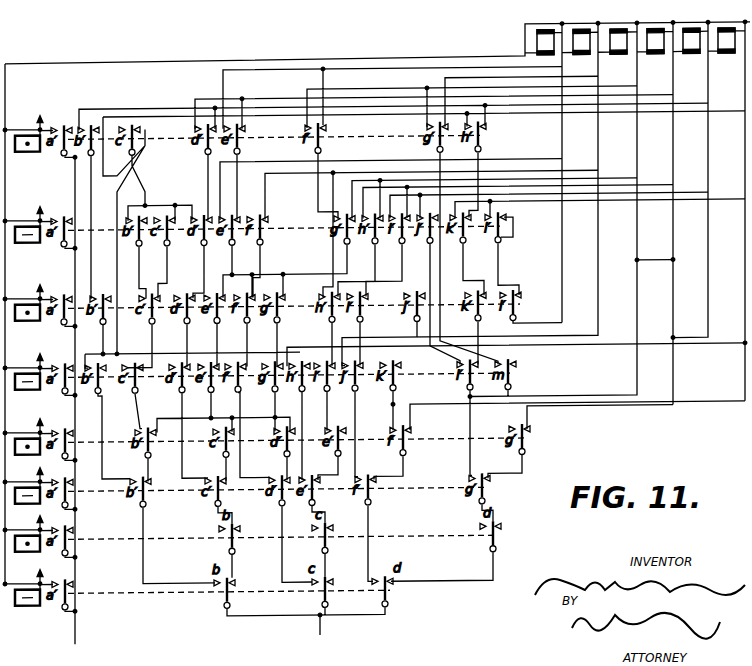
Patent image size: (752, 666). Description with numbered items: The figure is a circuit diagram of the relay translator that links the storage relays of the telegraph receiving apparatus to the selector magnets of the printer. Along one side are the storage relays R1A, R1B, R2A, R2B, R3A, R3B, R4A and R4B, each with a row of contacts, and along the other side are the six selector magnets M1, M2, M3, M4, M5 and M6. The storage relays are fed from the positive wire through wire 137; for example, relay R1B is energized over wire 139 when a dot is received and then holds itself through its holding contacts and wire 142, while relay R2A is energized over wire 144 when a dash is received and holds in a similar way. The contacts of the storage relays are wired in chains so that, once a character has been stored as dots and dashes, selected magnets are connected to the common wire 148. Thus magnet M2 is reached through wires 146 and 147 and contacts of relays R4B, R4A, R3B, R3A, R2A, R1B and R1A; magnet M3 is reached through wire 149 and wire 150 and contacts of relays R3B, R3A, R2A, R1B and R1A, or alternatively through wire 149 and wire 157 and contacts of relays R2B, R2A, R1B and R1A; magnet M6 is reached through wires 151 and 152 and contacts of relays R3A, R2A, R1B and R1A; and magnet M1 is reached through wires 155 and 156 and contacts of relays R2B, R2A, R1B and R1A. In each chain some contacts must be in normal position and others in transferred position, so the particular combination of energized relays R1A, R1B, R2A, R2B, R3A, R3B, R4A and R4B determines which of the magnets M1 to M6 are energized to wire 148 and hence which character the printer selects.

The wire 137 is at (6, 80).
The wire 139 is at (44, 583).
The wire 142 is at (80, 632).
The wire 144 is at (45, 482).
The wire 146 is at (708, 77).
The wire 147 is at (688, 101).
The wire 148 is at (323, 628).
The wire 149 is at (673, 137).
The wire 150 is at (652, 263).
The wire 151 is at (562, 135).
The wire 152 is at (528, 326).
The wire 155 is at (745, 152).
The wire 156 is at (700, 412).
The wire 157 is at (650, 416).
The selector magnet M1 is at (727, 35).
The selector magnet M2 is at (691, 35).
The selector magnet M3 is at (655, 35).
The selector magnet M4 is at (618, 35).
The selector magnet M5 is at (581, 35).
The selector magnet M6 is at (544, 35).
The storage relay R4B is at (28, 142).
The storage relay R4A is at (28, 233).
The storage relay R3B is at (28, 311).
The storage relay R3A is at (28, 380).
The storage relay R2B is at (28, 445).
The storage relay R2A is at (28, 494).
The storage relay R1B is at (28, 542).
The storage relay R1A is at (28, 596).